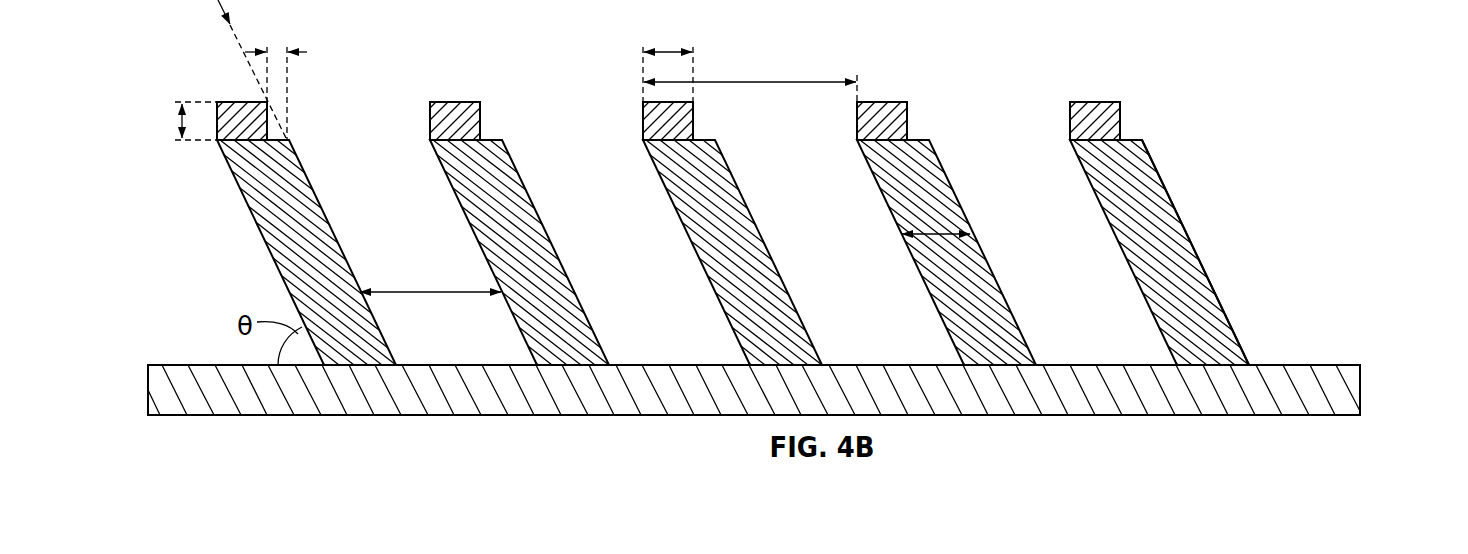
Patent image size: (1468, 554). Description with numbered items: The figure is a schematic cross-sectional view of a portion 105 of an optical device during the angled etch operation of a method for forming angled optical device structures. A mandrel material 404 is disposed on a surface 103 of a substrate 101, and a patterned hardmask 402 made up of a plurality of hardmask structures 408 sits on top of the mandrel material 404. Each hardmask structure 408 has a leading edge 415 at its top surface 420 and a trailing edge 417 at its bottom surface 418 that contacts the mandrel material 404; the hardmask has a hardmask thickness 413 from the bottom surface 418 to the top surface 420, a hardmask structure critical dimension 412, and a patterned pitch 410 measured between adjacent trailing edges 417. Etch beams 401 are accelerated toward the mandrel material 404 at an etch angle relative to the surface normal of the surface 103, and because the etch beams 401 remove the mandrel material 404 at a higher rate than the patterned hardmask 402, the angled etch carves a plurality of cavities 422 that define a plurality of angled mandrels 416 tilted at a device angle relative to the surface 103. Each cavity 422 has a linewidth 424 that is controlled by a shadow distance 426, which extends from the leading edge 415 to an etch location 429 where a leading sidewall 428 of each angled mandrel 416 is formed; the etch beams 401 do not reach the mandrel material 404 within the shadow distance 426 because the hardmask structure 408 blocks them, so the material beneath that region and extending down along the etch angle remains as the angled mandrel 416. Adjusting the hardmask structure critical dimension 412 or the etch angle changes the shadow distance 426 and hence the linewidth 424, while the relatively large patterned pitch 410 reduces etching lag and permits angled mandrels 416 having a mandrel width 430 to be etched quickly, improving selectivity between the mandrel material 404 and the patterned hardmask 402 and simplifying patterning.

The substrate 101 is at (1360, 392).
The surface 103 is at (1315, 365).
The portion 105 is at (1260, 45).
The etch beams 401 is at (215, 2).
The patterned hardmask 402 is at (1165, 220).
The mandrel material 404 is at (1157, 170).
The hardmask structure 408 is at (878, 117).
The patterned pitch 410 is at (775, 82).
The hardmask structure critical dimension 412 is at (662, 51).
The hardmask thickness 413 is at (175, 118).
The leading edge 415 is at (265, 102).
The angled mandrel 416 is at (1162, 228).
The trailing edge 417 is at (430, 140).
The bottom surface 418 is at (437, 143).
The top surface 420 is at (465, 102).
The cavity 422 is at (645, 246).
The linewidth 424 is at (420, 291).
The shadow distance 426 is at (296, 52).
The leading sidewall 428 is at (289, 140).
The etch location 429 is at (295, 142).
The mandrel width 430 is at (942, 232).